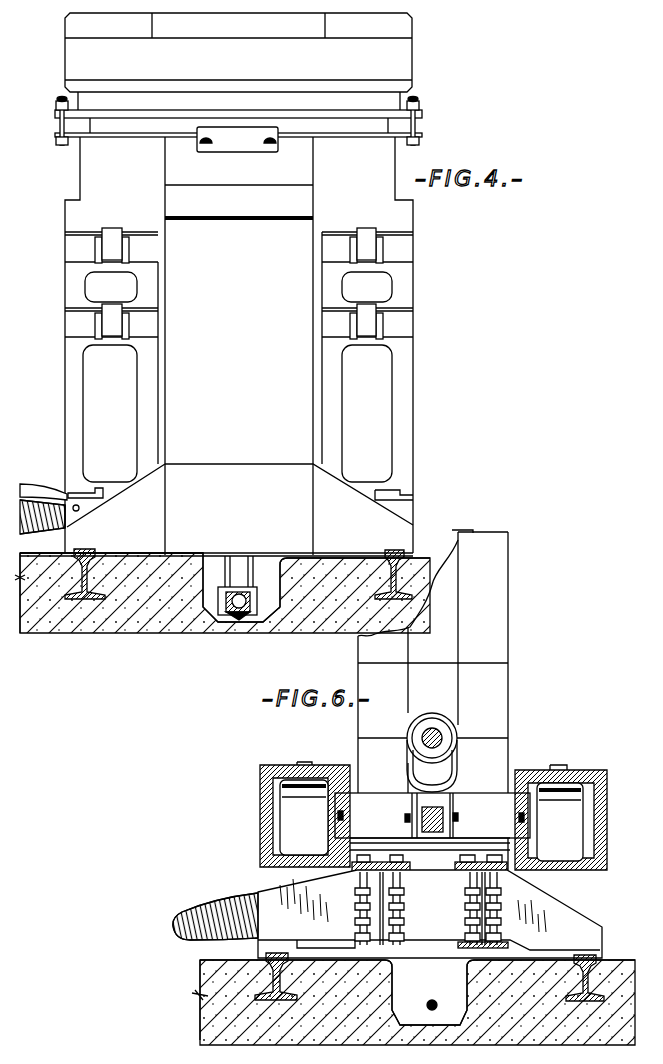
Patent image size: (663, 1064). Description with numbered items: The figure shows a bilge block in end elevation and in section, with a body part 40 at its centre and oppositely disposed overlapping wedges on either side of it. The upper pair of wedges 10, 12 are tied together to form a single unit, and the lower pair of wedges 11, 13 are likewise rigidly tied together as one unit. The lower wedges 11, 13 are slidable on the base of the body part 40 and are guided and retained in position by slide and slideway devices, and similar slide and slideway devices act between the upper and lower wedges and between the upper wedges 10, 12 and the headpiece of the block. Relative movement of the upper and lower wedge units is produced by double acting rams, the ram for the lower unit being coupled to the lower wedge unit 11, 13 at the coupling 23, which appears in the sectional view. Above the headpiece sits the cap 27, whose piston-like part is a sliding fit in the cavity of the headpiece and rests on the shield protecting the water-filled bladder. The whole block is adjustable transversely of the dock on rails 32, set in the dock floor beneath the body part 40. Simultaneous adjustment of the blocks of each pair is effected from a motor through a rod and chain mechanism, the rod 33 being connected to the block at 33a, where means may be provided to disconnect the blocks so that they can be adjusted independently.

In FIG. 4, the cap 27 is at (298, 33).
In FIG. 4, the body part 40 is at (95, 182).
In FIG. 6, the body part 40 is at (568, 906).
In FIG. 4, the upper wedge 10 is at (82, 296).
In FIG. 4, the upper wedge 12 is at (398, 297).
In FIG. 4, the lower wedge 11 is at (78, 418).
In FIG. 6, the lower wedge 11 is at (600, 823).
In FIG. 4, the lower wedge 13 is at (400, 380).
In FIG. 6, the lower wedge 13 is at (272, 812).
In FIG. 4, the rails 32 is at (94, 551).
In FIG. 6, the rails 32 is at (263, 1000).
In FIG. 4, the rod mechanism 33 is at (255, 606).
In FIG. 6, the rod mechanism 33 is at (437, 1004).
In FIG. 4, the rod connection 33a is at (228, 600).
In FIG. 6, the ram coupling 23 is at (410, 813).